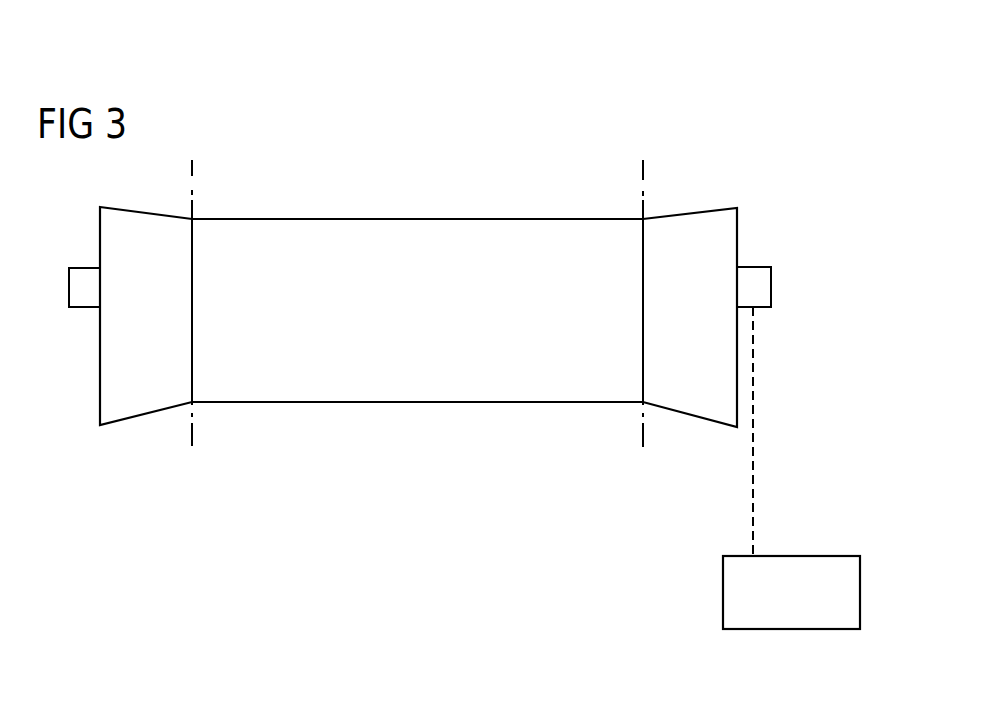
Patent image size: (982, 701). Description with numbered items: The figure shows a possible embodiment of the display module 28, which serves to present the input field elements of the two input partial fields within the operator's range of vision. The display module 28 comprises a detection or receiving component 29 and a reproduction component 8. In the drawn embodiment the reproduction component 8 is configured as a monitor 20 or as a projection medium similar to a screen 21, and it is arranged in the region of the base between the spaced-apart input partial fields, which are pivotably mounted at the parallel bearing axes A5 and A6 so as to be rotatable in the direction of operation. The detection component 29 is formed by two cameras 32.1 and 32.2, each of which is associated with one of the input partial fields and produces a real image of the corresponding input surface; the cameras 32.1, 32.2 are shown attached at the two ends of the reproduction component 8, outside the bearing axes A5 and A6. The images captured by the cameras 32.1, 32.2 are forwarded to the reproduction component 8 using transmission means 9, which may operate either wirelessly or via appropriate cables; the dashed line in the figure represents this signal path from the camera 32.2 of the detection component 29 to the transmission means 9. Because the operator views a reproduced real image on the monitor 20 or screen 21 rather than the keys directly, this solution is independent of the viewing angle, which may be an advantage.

The reproduction component 8 is at (406, 236).
The monitor 20 is at (417, 430).
The screen 21 is at (399, 385).
The bearing axis A5 is at (192, 173).
The bearing axis A6 is at (643, 173).
The camera 32.1 is at (83, 295).
The detection component 29 is at (792, 251).
The camera 32.2 is at (757, 273).
The display module 28 is at (803, 423).
The transmission means 9 is at (723, 592).